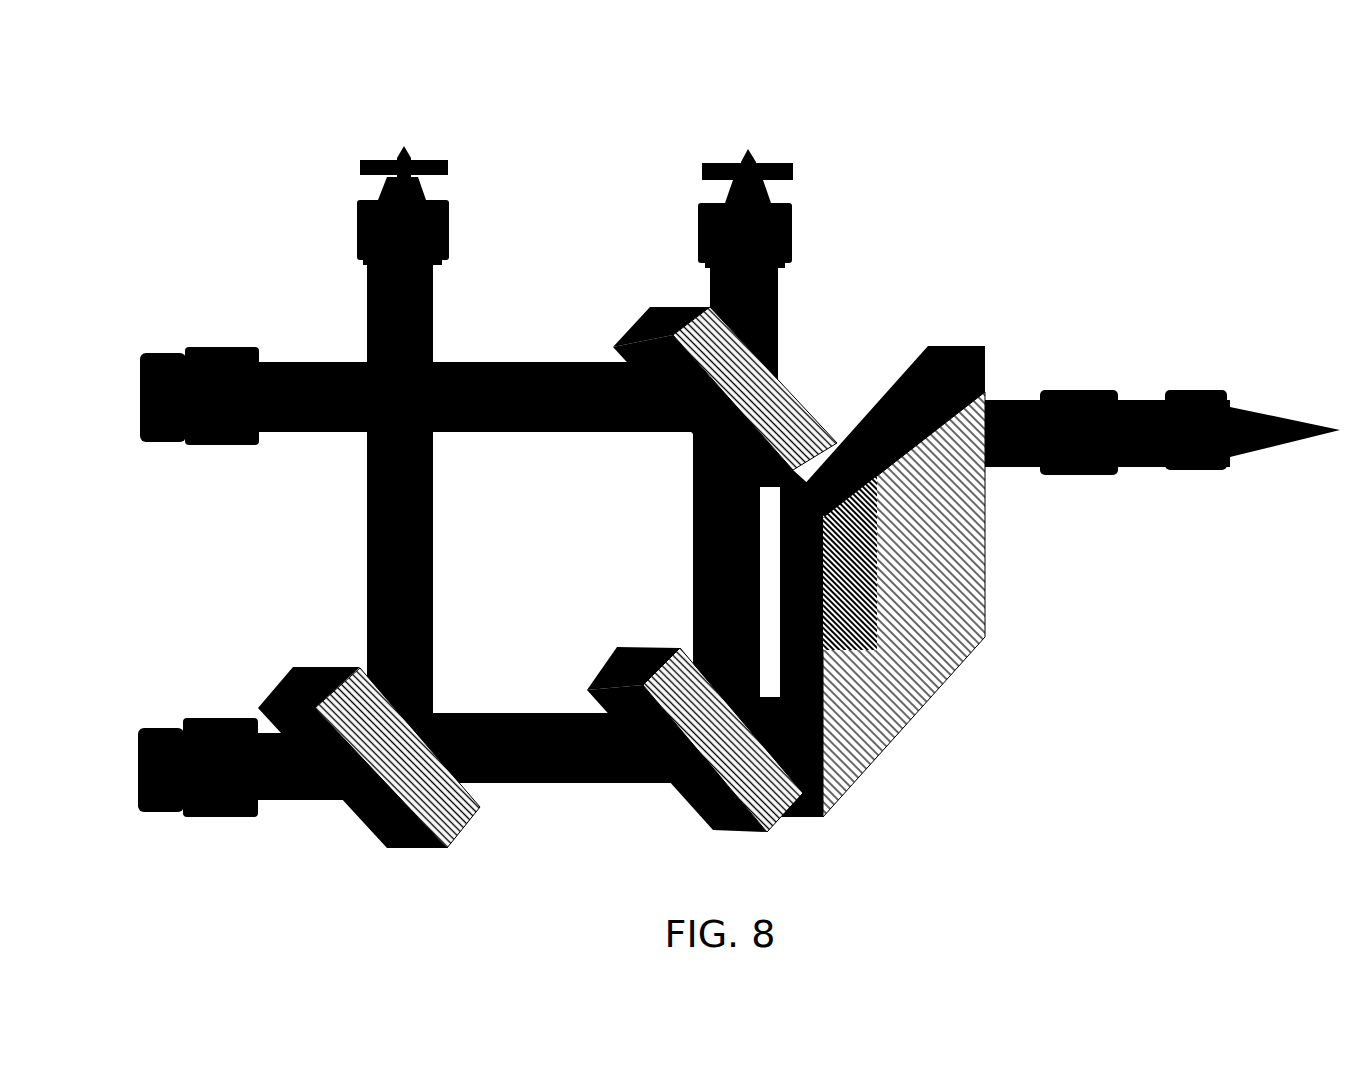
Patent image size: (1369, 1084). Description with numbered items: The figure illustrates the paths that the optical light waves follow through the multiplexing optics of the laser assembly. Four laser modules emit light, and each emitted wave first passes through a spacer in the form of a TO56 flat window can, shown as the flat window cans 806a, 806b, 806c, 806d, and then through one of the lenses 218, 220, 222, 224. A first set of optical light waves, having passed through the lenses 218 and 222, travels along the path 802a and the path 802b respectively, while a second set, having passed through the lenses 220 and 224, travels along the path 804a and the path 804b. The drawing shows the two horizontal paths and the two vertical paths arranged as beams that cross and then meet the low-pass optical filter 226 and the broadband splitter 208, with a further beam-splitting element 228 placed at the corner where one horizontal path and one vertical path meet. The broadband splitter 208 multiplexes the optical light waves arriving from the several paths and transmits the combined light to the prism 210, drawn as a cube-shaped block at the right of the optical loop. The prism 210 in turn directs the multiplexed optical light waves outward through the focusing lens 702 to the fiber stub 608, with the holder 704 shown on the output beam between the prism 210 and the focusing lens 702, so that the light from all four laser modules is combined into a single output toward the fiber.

The broadband splitter 208 is at (762, 800).
The prism 210 is at (939, 353).
The lens 218 is at (240, 733).
The lens 220 is at (238, 362).
The lens 222 is at (386, 241).
The lens 224 is at (772, 232).
The low-pass optical filter 226 is at (402, 830).
The beam splitter 228 is at (672, 315).
The fiber stub 608 is at (1330, 426).
The focusing lens 702 is at (1192, 388).
The holder 704 is at (1072, 387).
The path 802a is at (293, 801).
The path 802b is at (368, 554).
The path 804a is at (498, 363).
The path 804b is at (779, 298).
The flat window can 806a is at (162, 733).
The flat window can 806b is at (165, 357).
The flat window can 806c is at (380, 162).
The flat window can 806d is at (712, 165).